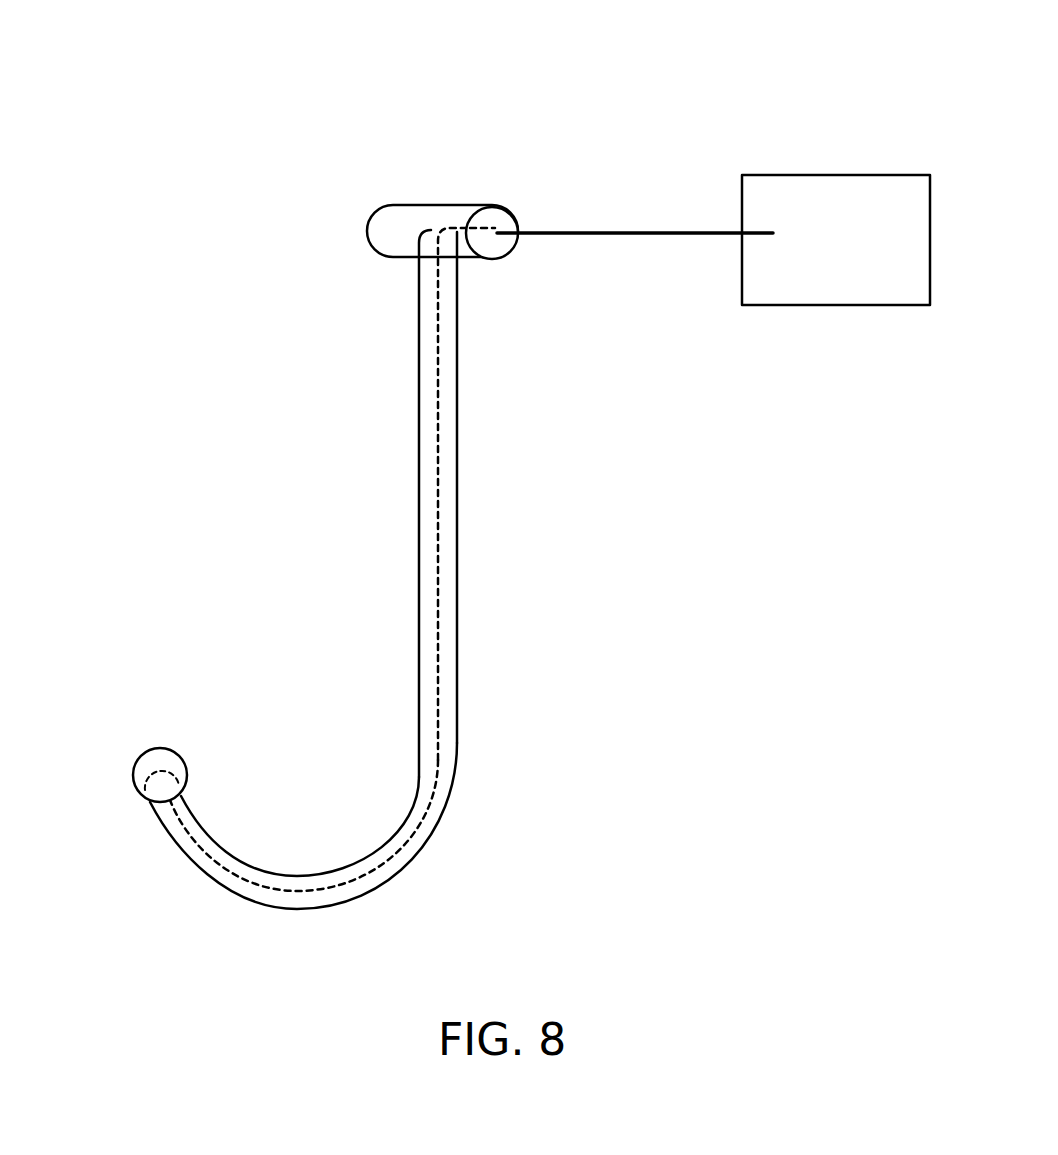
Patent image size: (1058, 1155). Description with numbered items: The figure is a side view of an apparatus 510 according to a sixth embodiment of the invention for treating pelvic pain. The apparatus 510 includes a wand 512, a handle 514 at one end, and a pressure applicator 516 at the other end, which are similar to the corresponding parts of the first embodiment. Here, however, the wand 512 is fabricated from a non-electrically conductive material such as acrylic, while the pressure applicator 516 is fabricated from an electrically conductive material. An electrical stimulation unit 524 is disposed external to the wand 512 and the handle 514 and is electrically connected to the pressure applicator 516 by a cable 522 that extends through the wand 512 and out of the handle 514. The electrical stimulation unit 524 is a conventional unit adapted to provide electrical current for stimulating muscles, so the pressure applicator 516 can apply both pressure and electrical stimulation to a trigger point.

The apparatus 510 is at (298, 128).
The wand 512 is at (430, 413).
The handle 514 is at (438, 205).
The pressure applicator 516 is at (145, 750).
The cable 522 is at (437, 525).
The electrical stimulation unit 524 is at (870, 175).